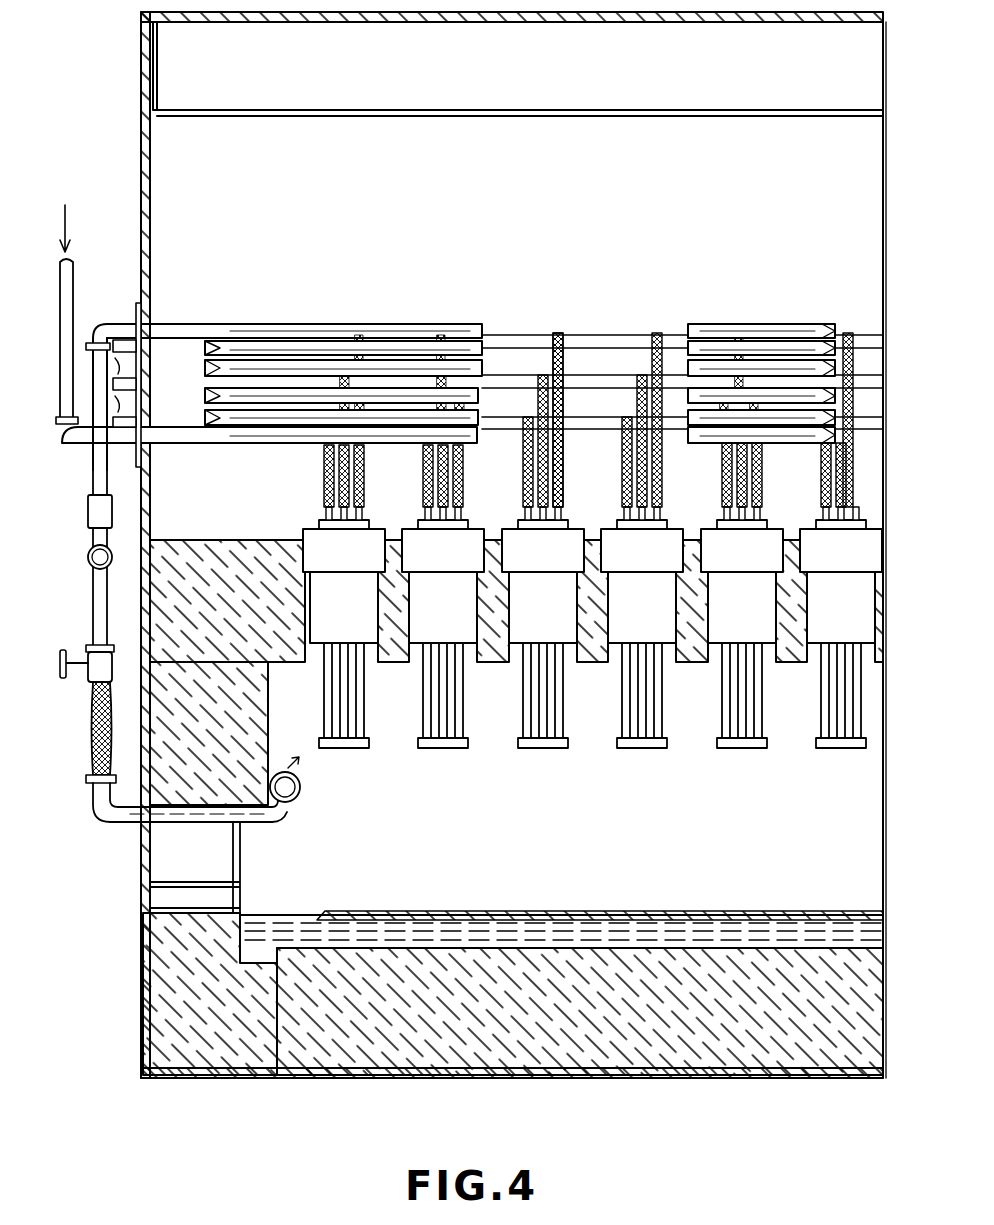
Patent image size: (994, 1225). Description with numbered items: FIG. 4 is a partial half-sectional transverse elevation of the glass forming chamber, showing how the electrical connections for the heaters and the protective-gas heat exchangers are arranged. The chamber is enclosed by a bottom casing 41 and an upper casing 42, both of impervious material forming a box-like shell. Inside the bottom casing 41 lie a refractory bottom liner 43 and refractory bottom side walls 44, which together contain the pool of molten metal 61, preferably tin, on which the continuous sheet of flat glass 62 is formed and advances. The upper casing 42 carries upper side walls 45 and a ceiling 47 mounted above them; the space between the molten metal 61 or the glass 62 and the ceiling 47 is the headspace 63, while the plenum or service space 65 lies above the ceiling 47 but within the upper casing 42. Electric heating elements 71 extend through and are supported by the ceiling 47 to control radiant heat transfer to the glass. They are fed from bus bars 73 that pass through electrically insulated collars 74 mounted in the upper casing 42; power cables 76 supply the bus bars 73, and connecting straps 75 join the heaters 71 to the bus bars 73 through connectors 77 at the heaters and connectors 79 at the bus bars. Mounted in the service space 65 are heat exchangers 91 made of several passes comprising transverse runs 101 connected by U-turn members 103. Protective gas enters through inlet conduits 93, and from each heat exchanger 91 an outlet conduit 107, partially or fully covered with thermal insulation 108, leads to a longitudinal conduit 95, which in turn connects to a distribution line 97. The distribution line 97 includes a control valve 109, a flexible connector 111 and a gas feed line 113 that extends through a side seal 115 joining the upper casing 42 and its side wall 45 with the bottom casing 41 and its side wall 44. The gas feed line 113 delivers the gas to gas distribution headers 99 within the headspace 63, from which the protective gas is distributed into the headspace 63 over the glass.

The bottom casing 41 is at (690, 1070).
The upper casing 42 is at (145, 150).
The bottom liner 43 is at (790, 1050).
The bottom side walls 44 is at (190, 930).
The upper side walls 45 is at (268, 708).
The ceiling 47 is at (236, 540).
The pool of molten metal 61 is at (878, 936).
The continuous sheet of flat glass 62 is at (750, 912).
The headspace 63 is at (564, 845).
The plenum or service space 65 is at (532, 206).
The electric heating elements 71 is at (565, 740).
The bus bars 73 is at (600, 335).
The electrically insulated collars 74 is at (140, 355).
The connecting straps 75 is at (568, 470).
The power cables 76 is at (134, 312).
The connectors 77 is at (566, 515).
The connectors 79 is at (548, 335).
The heat exchangers 91 is at (357, 318).
The inlet conduits 93 is at (62, 305).
The longitudinal conduits 95 is at (89, 557).
The distribution line 97 is at (80, 620).
The gas distribution headers 99 is at (301, 790).
The transverse runs 101 is at (760, 322).
The U-turn members 103 is at (848, 330).
The outlet conduit 107 is at (94, 480).
The thermal insulation 108 is at (89, 516).
The control valve 109 is at (86, 680).
The flexible connector 111 is at (91, 737).
The gas feed line 113 is at (118, 816).
The side seal 115 is at (145, 885).